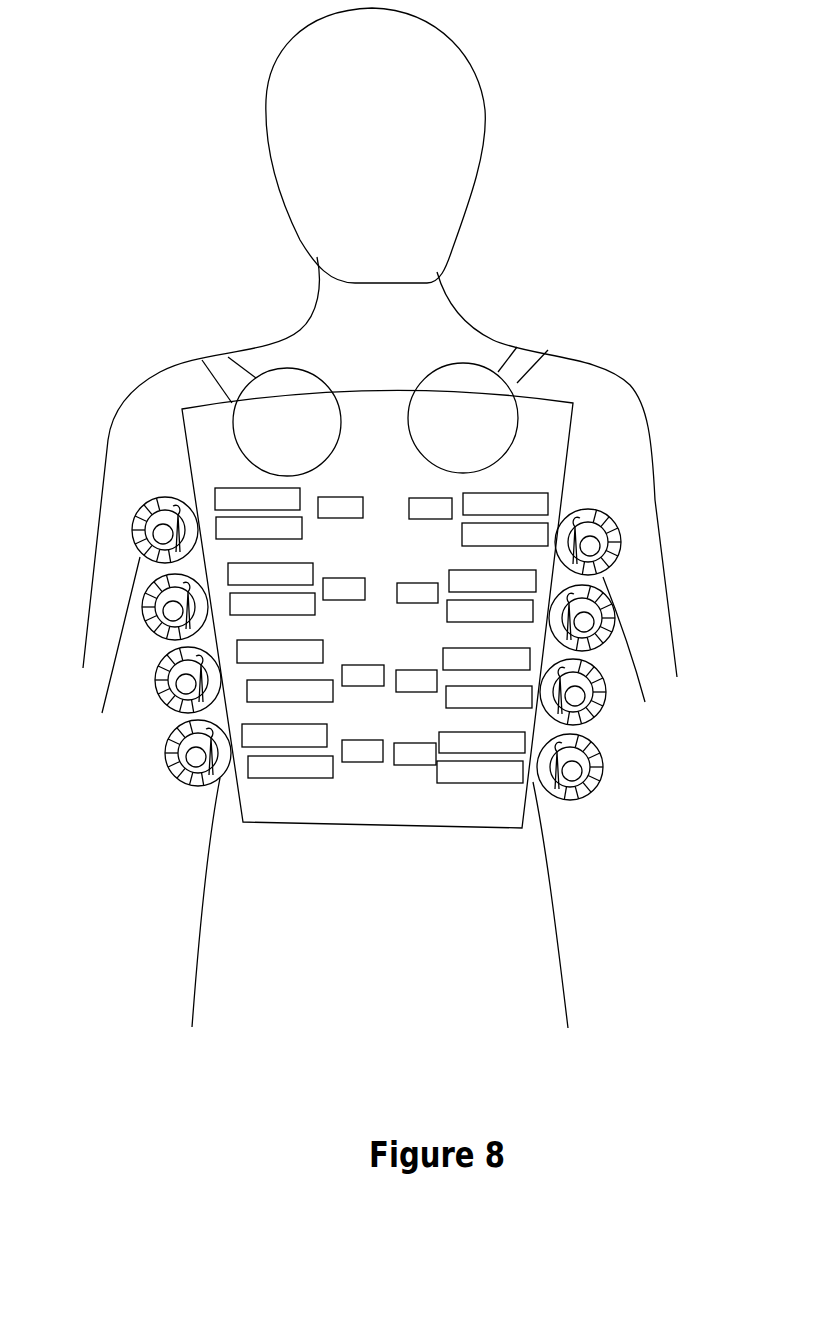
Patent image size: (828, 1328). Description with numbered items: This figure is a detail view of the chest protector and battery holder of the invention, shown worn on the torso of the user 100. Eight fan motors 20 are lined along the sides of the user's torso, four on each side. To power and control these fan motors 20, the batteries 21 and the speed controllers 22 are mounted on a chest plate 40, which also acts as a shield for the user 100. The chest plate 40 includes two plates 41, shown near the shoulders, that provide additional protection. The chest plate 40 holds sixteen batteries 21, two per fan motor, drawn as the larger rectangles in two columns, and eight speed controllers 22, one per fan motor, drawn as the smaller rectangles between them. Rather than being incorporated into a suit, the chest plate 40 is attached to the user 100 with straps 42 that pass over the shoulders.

The user 100 is at (287, 193).
The chest plate 40 is at (367, 428).
The plates 41 is at (290, 413).
The straps 42 is at (232, 403).
The batteries 21 is at (240, 490).
The speed controllers 22 is at (437, 505).
The fan motors 20 is at (145, 643).